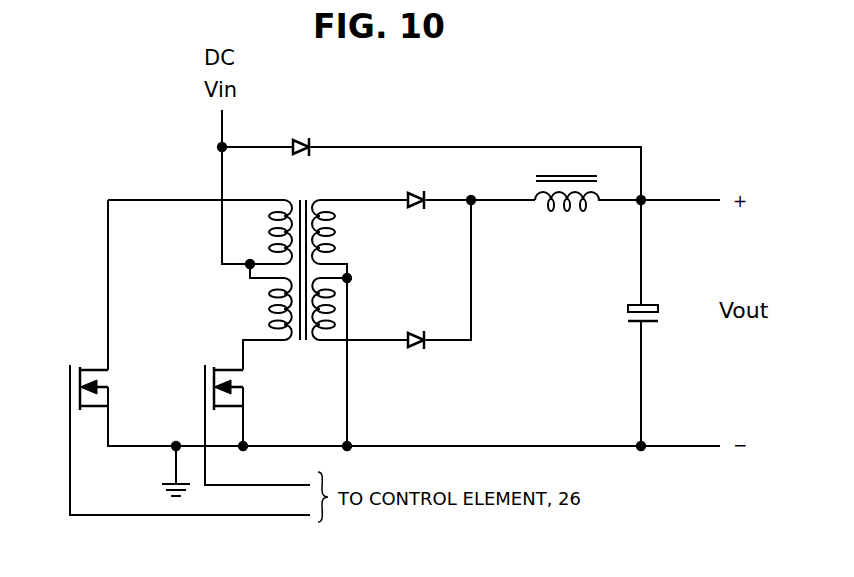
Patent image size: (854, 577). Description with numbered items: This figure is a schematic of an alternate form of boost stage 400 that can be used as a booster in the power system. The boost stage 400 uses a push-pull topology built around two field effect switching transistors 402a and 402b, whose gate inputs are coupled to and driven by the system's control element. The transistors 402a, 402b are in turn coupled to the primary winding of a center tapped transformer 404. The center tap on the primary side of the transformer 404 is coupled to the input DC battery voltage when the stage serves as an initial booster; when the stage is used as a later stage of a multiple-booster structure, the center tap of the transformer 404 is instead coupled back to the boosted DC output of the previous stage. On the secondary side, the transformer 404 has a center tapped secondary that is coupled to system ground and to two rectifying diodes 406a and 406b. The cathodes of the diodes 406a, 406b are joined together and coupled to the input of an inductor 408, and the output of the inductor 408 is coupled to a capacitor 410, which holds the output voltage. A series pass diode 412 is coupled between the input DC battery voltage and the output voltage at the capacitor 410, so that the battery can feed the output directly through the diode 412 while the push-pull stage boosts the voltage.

The boost stage 400 is at (619, 117).
The field effect switching transistor 402a is at (88, 368).
The field effect switching transistor 402b is at (237, 368).
The center tapped transformer 404 is at (316, 189).
The rectifying diode 406a is at (421, 188).
The rectifying diode 406b is at (410, 352).
The inductor 408 is at (560, 214).
The capacitor 410 is at (657, 318).
The series pass diode 412 is at (301, 140).